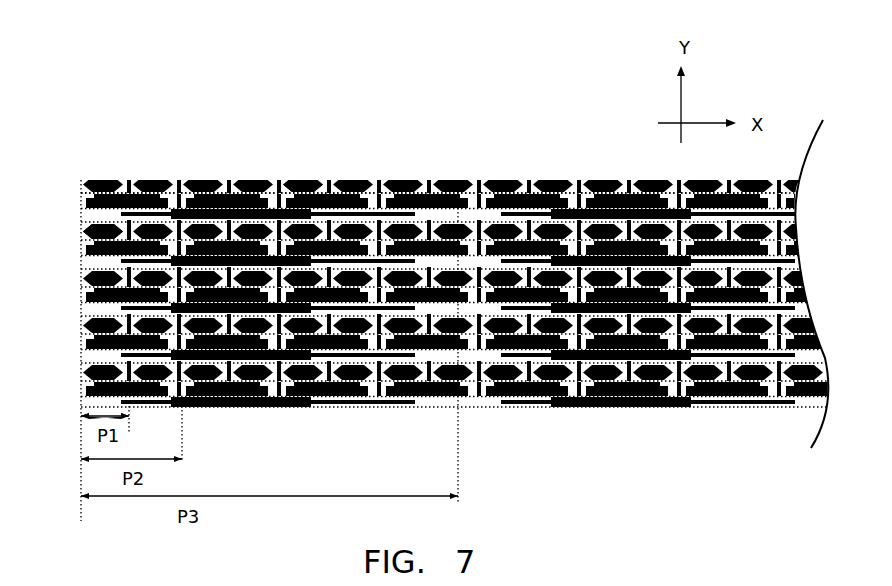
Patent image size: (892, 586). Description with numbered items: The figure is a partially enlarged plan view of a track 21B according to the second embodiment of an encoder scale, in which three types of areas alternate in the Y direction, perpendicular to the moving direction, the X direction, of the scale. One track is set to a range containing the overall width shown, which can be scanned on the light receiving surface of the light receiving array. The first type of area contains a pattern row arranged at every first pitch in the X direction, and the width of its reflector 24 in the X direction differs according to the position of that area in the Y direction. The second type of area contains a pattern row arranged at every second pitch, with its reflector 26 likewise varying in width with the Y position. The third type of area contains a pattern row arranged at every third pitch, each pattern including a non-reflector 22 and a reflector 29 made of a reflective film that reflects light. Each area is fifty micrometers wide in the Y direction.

The track 21B is at (436, 79).
The non-reflector 22 is at (463, 187).
The reflector 24 is at (290, 173).
The reflector 26 is at (224, 183).
The reflector 29 is at (610, 399).